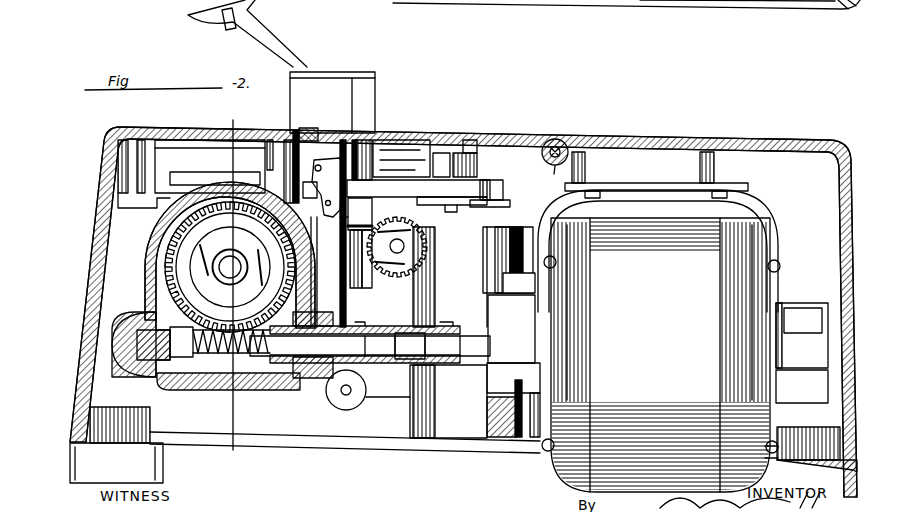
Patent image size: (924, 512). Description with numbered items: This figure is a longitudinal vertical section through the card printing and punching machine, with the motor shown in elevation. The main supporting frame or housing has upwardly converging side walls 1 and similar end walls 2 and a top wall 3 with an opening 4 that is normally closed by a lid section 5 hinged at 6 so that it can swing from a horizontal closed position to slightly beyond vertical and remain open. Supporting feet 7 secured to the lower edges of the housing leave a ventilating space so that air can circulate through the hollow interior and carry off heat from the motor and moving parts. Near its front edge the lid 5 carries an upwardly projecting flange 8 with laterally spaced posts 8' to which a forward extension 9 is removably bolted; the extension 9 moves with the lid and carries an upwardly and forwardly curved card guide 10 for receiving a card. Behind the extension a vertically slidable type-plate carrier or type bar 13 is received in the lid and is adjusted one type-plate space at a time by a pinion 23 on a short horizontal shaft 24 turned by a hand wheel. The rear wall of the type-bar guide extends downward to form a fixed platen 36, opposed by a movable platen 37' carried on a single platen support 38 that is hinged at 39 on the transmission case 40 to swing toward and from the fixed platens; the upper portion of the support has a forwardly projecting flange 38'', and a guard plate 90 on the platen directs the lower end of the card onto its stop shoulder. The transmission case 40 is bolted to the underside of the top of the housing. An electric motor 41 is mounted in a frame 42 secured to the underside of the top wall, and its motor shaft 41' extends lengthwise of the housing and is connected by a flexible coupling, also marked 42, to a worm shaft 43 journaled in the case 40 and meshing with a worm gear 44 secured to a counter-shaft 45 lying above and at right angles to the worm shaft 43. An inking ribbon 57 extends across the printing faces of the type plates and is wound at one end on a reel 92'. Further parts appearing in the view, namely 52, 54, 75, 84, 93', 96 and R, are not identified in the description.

The side walls 1 is at (656, 0).
The end walls 2 is at (96, 257).
The top wall 3 is at (580, 126).
The opening 4 is at (300, 130).
The lid section 5 is at (410, 137).
The pivotal hinge 6 is at (557, 0).
The supporting feet 7 is at (522, 162).
The upwardly projecting flange 8 is at (343, 137).
The posts 8' is at (379, 62).
The forward extension 9 is at (330, 80).
The card guide 10 is at (260, 42).
The type-plate carrier 13 is at (362, 284).
The pinion 23 is at (420, 246).
The horizontal shaft 24 is at (402, 248).
The fixed platen 36 is at (370, 206).
The movable platen 37' is at (330, 187).
The platen support 38 is at (327, 272).
The forwardly projecting flange 38'' is at (205, 171).
The pivotal pin 39 is at (344, 397).
The transmission case 40 is at (160, 208).
The electric motor 41 is at (660, 355).
The motor shaft 41' is at (496, 332).
The motor frame 42 is at (777, 200).
The worm shaft 43 is at (240, 356).
The worm gear 44 is at (176, 289).
The counter-shaft 45 is at (236, 262).
The stop 52 is at (308, 199).
The pin 54 is at (316, 242).
The inking ribbon 57 is at (418, 176).
The pivot 75 is at (327, 157).
The block 84 is at (360, 214).
The guard plate 90 is at (345, 303).
The reel 92' is at (502, 193).
The pin 93' is at (464, 217).
The pin 96 is at (446, 207).
The resistance R is at (462, 428).